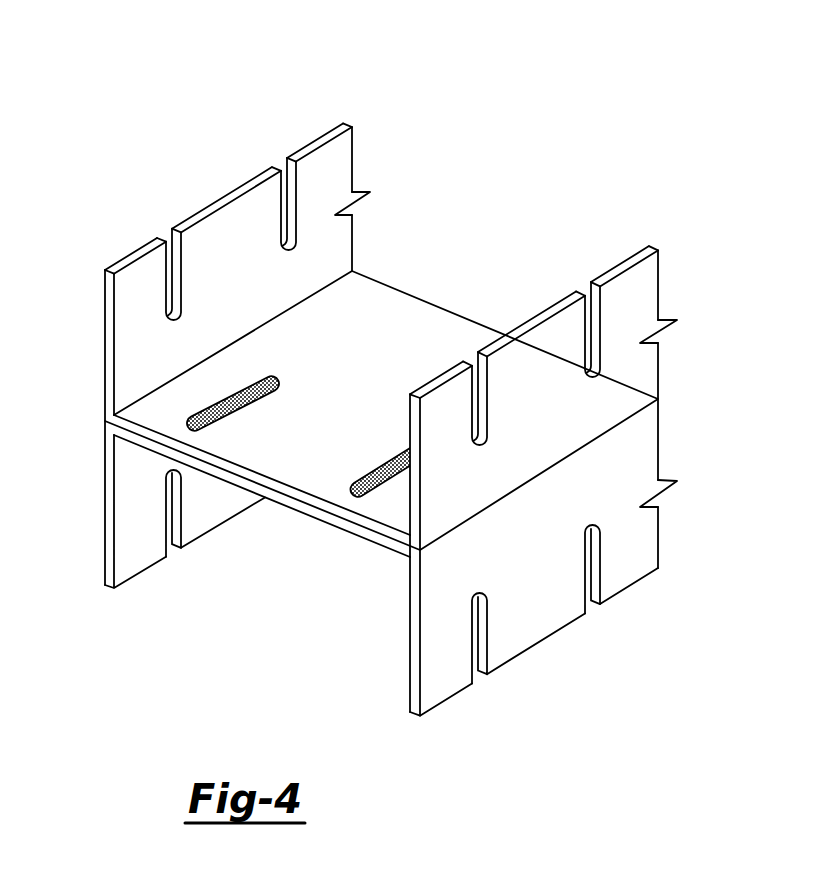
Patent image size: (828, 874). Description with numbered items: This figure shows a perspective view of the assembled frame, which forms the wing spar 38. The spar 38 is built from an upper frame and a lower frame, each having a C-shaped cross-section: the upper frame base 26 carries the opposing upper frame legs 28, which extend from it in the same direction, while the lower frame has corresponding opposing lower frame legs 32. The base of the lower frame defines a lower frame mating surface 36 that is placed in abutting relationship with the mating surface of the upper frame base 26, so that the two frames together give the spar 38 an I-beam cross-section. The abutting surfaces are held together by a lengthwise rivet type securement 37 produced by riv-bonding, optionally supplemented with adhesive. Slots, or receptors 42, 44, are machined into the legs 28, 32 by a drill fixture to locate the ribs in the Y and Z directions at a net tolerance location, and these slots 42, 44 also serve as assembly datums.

The upper frame base 26 is at (336, 353).
The upper frame legs 28 is at (227, 296).
The lower frame legs 32 is at (195, 521).
The lower frame mating surface 36 is at (308, 515).
The rivet type securement 37 is at (225, 402).
The spar 38 is at (168, 165).
The receptor 42 is at (273, 152).
The receptor 44 is at (480, 682).